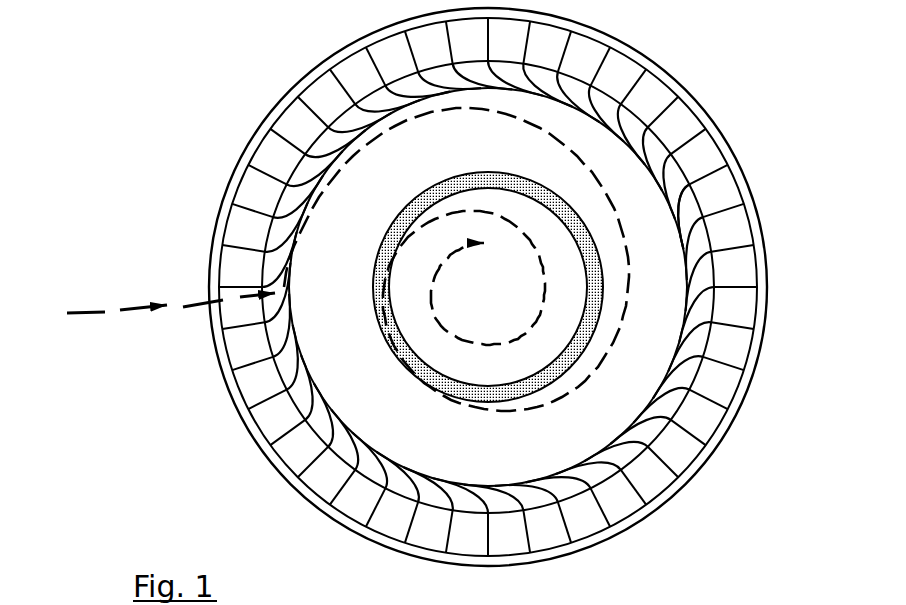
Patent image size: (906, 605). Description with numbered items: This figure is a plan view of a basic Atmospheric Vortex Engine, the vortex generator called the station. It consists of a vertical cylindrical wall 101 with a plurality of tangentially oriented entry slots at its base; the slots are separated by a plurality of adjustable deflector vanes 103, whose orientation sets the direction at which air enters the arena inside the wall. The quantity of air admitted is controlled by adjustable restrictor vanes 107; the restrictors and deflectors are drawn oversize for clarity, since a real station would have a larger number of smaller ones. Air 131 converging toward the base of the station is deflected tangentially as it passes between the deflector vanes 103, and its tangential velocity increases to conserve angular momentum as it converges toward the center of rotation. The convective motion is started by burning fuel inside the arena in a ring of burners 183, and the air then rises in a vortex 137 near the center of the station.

The vertical cylindrical wall 101 is at (310, 178).
The deflector vanes 103 is at (687, 207).
The restrictor vanes 107 is at (698, 105).
The air 131 is at (130, 298).
The vortex 137 is at (437, 327).
The ring of burners 183 is at (605, 315).